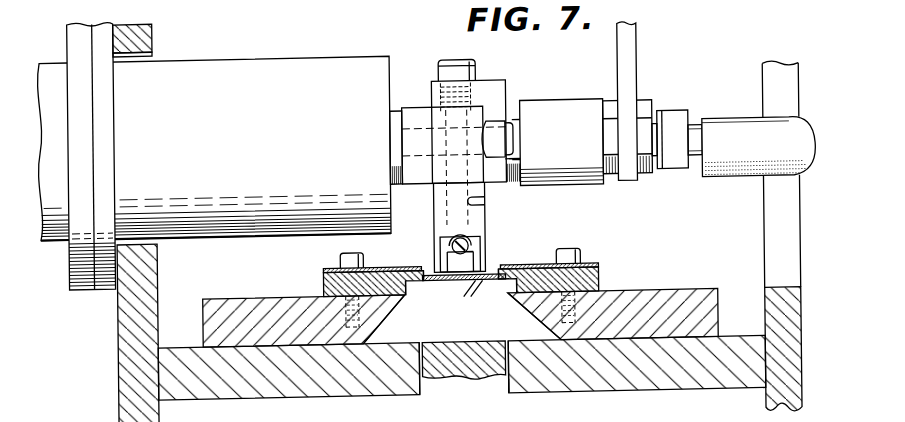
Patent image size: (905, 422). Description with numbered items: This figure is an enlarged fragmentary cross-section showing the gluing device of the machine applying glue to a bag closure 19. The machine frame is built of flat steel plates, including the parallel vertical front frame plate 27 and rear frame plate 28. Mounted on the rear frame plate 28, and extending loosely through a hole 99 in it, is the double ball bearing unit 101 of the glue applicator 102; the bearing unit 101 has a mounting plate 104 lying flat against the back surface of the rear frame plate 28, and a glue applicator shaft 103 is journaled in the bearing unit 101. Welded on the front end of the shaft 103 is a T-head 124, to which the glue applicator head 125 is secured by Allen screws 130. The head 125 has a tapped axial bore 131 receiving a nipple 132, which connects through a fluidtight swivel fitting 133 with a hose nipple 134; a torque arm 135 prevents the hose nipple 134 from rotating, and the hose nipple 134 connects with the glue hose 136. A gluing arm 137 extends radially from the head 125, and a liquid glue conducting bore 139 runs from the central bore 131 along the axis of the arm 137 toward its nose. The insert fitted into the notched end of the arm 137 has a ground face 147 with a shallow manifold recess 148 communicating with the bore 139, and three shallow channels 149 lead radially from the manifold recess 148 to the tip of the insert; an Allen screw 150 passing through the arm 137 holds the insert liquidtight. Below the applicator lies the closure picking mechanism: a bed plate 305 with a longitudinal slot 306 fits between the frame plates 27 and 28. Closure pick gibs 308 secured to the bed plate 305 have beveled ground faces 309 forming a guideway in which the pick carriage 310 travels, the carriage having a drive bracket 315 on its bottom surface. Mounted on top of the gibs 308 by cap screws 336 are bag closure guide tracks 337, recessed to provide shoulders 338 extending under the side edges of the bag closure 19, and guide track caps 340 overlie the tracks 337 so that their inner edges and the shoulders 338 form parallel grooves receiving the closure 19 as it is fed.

The bag closure 19 is at (477, 283).
The front frame plate 27 is at (770, 406).
The rear frame plate 28 is at (147, 34).
The hole 99 is at (159, 240).
The double ball bearing unit 101 is at (289, 56).
The glue applicator 102 is at (664, 111).
The glue applicator shaft 103 is at (396, 125).
The mounting plate 104 is at (107, 127).
The T-head 124 is at (420, 107).
The glue applicator head 125 is at (503, 88).
The Allen screws 130 is at (501, 138).
The axial bore 131 is at (401, 149).
The nipple 132 is at (514, 104).
The swivel fitting 133 is at (590, 178).
The hose nipple 134 is at (678, 162).
The torque arm 135 is at (634, 86).
The glue hose 136 is at (738, 165).
The gluing arm 137 is at (438, 200).
The liquid glue conducting bore 139 is at (486, 202).
The ground face 147 is at (482, 240).
The manifold recess 148 is at (473, 253).
The channels 149 is at (467, 281).
The Allen screw 150 is at (453, 252).
The bed plate 305 is at (640, 381).
The longitudinal slot 306 is at (505, 386).
The closure pick gibs 308 is at (227, 298).
The beveled ground faces 309 is at (377, 333).
The pick carriage 310 is at (403, 342).
The drive bracket 315 is at (456, 373).
The cap screws 336 is at (347, 251).
The bag closure guide tracks 337 is at (322, 285).
The shoulders 338 is at (411, 296).
The guide track caps 340 is at (324, 265).